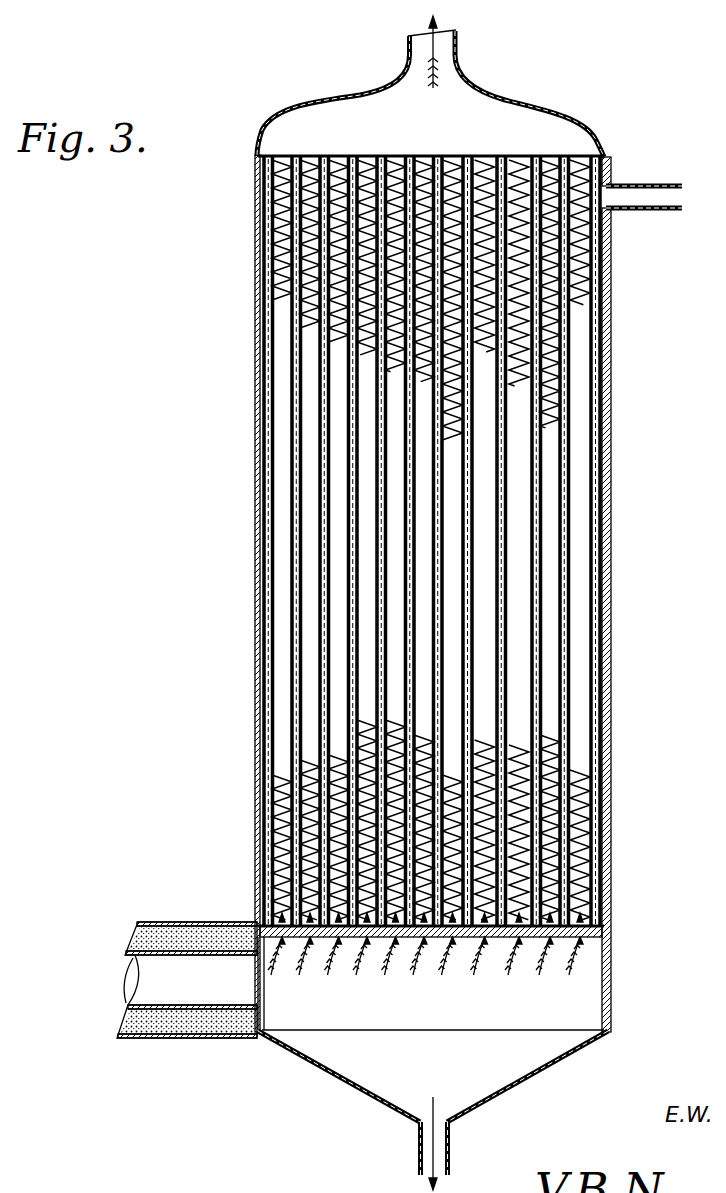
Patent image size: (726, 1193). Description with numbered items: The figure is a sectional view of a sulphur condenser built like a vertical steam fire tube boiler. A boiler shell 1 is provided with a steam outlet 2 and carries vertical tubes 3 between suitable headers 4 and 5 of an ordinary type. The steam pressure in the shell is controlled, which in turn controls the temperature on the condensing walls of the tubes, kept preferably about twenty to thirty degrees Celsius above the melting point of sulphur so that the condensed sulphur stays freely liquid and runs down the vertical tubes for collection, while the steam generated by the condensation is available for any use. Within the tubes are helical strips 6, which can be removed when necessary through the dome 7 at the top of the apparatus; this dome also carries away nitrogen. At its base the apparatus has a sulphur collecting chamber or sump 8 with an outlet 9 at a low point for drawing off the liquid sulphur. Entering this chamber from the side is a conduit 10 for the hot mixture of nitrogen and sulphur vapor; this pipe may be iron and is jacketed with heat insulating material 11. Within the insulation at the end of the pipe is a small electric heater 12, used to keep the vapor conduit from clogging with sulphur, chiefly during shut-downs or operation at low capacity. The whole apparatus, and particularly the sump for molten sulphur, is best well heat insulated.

The boiler shell 1 is at (611, 456).
The steam outlet 2 is at (683, 207).
The vertical tubes 3 is at (567, 603).
The header 4 is at (409, 157).
The header 5 is at (270, 561).
The helical strips 6 is at (265, 218).
The dome 7 is at (586, 125).
The sulphur collecting chamber or sump 8 is at (600, 989).
The outlet 9 is at (451, 1146).
The conduit 10 is at (137, 976).
The heat insulating material 11 is at (160, 1040).
The electric heater 12 is at (266, 1011).